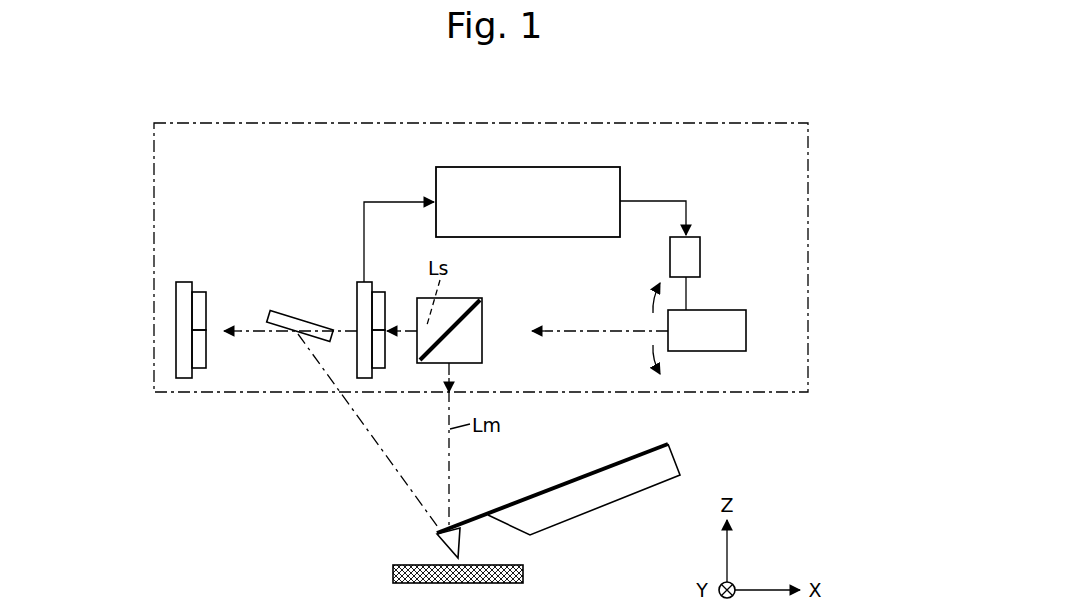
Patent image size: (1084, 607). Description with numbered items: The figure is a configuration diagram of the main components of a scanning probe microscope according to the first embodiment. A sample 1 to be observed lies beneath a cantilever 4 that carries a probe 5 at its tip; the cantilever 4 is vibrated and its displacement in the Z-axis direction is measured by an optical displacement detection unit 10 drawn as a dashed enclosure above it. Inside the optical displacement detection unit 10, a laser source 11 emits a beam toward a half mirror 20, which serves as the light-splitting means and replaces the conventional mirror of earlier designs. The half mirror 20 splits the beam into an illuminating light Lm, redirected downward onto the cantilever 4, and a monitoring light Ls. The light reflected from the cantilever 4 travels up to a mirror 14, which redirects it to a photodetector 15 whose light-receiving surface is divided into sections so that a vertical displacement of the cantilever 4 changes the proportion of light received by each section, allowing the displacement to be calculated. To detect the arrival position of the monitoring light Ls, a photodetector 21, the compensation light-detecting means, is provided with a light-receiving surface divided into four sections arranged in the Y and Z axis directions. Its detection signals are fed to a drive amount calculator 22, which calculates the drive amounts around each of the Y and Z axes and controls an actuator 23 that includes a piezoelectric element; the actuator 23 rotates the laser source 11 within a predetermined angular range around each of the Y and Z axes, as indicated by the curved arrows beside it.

The sample 1 is at (393, 573).
The cantilever 4 is at (482, 514).
The probe 5 is at (447, 546).
The optical displacement detection unit 10 is at (808, 208).
The laser source 11 is at (748, 318).
The mirror 14 is at (286, 314).
The photodetector 15 is at (205, 298).
The half mirror 20 is at (483, 303).
The photodetector 21 is at (380, 290).
The drive amount calculator 22 is at (500, 165).
The actuator 23 is at (702, 250).